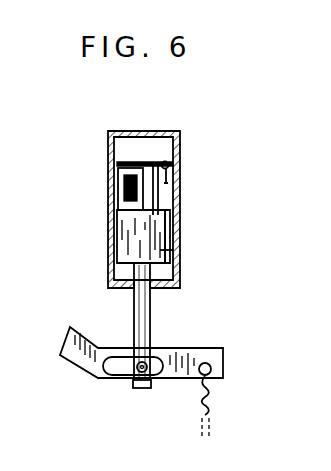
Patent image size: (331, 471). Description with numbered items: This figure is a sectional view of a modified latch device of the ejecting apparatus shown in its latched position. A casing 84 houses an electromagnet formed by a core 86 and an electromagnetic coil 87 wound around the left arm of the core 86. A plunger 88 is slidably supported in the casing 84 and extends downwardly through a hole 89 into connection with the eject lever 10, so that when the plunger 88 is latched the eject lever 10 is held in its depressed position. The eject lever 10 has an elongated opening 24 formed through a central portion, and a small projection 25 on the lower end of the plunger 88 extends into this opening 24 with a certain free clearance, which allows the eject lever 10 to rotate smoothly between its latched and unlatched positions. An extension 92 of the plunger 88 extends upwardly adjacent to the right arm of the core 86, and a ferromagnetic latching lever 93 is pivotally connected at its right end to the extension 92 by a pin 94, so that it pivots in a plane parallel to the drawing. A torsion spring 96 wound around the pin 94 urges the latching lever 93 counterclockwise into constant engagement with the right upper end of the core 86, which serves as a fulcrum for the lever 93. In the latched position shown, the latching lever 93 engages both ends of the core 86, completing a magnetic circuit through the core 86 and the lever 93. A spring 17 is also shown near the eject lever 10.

The eject lever 10 is at (210, 350).
The spring 17 is at (212, 405).
The elongated opening 24 is at (110, 368).
The small projection 25 is at (138, 374).
The casing 84 is at (108, 150).
The core 86 is at (178, 222).
The electromagnetic coil 87 is at (118, 186).
The plunger 88 is at (170, 250).
The hole 89 is at (126, 279).
The extension 92 is at (168, 200).
The ferromagnetic latching lever 93 is at (127, 162).
The pin 94 is at (180, 162).
The torsion spring 96 is at (180, 185).